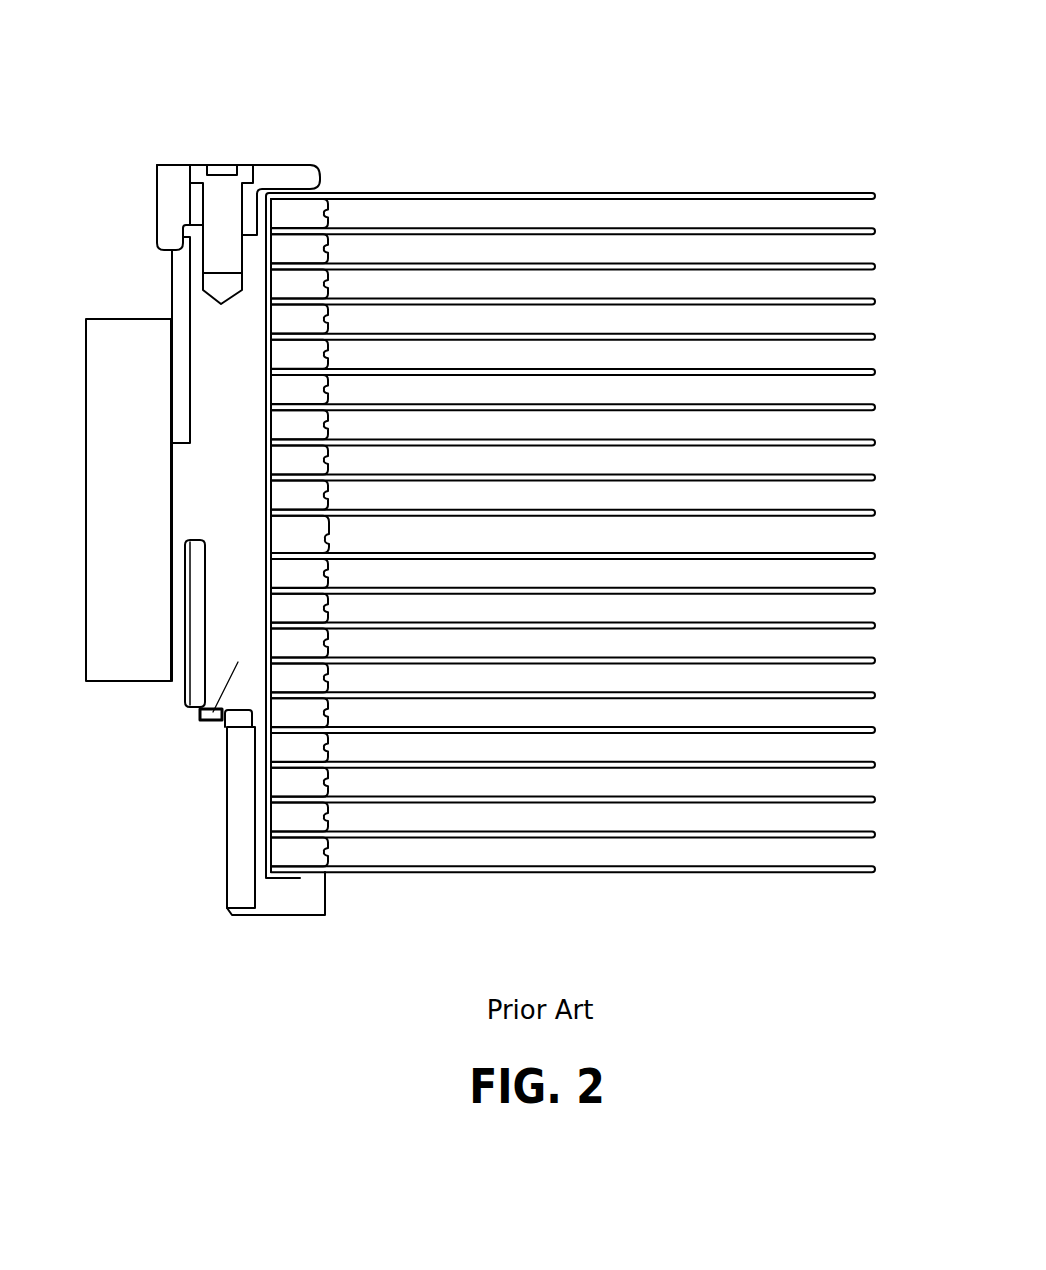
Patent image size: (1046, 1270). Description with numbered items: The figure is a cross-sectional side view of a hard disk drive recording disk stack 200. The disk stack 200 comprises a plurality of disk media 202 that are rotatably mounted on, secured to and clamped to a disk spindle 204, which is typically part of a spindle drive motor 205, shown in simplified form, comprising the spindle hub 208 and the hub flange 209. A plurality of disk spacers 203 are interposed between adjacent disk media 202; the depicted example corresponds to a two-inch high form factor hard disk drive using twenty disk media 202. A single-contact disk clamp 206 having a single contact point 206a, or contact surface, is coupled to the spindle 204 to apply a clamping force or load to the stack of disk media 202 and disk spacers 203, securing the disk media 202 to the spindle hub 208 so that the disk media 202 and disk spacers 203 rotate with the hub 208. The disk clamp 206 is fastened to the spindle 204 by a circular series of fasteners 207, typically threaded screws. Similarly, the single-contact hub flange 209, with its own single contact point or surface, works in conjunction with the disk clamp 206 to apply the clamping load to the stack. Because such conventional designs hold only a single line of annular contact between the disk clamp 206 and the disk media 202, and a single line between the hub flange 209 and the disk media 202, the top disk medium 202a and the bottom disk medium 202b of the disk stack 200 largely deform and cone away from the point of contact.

The disk stack 200 is at (391, 87).
The disk media 202 is at (885, 190).
The top disk medium 202a is at (763, 192).
The bottom disk medium 202b is at (847, 872).
The disk spacers 203 is at (322, 284).
The disk spindle 204 is at (213, 713).
The spindle drive motor 205 is at (112, 325).
The single-contact disk clamp 206 is at (287, 177).
The single contact point 206a is at (303, 205).
The fasteners 207 is at (220, 203).
The spindle hub 208 is at (242, 853).
The hub flange 209 is at (307, 902).